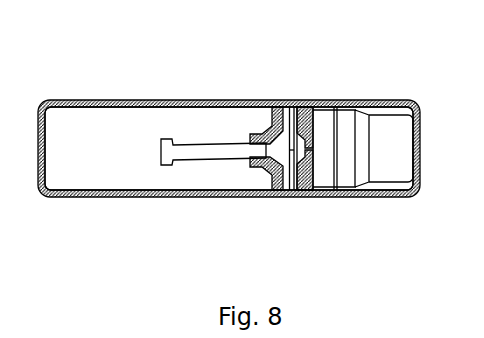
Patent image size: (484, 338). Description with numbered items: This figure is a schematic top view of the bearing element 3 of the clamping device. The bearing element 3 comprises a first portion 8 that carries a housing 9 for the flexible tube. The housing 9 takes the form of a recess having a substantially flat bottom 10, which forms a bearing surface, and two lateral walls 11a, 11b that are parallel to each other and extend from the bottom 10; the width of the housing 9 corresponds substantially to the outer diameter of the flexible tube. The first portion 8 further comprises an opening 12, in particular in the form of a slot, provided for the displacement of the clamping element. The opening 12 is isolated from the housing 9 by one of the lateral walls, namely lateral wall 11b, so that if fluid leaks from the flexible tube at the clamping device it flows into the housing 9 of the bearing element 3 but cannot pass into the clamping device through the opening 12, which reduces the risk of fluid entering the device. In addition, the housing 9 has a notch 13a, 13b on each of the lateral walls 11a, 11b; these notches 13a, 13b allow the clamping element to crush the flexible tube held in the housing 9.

The bearing element 3 is at (103, 178).
The first portion 8 is at (110, 127).
The housing 9 is at (291, 108).
The bottom 10 is at (291, 191).
The lateral wall 11a is at (307, 193).
The lateral wall 11b is at (267, 163).
The opening 12 is at (203, 160).
The notch 13a is at (320, 138).
The notch 13b is at (272, 135).